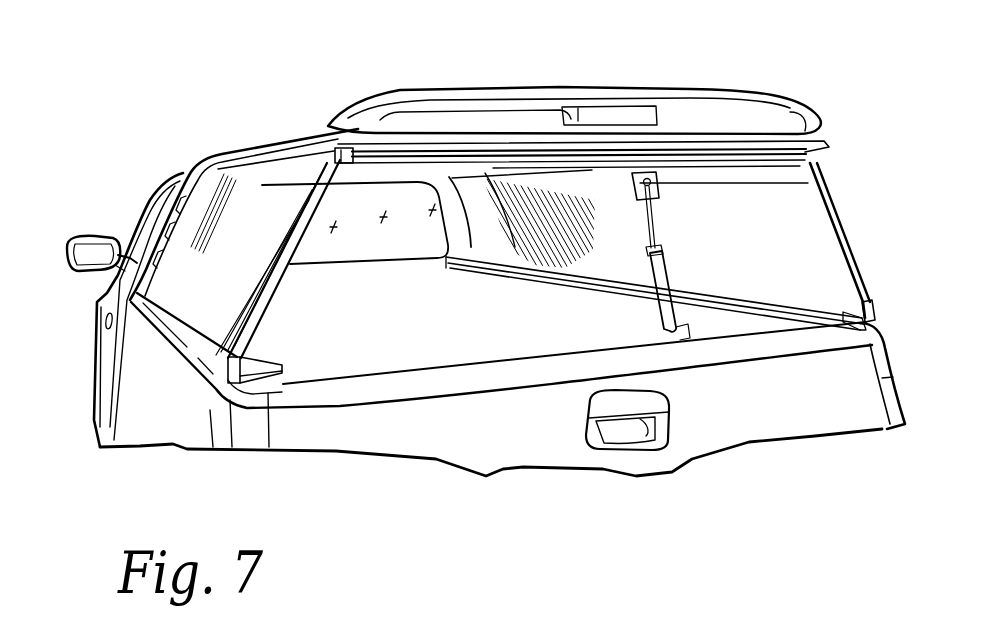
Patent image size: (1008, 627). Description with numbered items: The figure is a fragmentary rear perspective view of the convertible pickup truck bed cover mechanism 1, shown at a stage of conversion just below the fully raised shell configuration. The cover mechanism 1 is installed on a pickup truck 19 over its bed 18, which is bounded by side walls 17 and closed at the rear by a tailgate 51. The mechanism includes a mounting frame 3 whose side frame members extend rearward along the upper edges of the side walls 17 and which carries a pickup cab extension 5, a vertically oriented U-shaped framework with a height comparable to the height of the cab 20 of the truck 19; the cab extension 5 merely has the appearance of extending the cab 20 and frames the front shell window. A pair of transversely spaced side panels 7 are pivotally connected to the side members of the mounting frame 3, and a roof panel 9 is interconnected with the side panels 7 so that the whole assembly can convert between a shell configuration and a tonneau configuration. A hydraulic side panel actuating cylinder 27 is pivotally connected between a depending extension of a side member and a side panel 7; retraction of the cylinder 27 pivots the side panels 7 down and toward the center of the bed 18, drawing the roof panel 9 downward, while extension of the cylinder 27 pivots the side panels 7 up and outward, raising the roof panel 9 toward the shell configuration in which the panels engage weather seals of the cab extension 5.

The convertible pickup truck bed cover mechanism 1 is at (277, 95).
The mounting frame 3 is at (292, 355).
The pickup cab extension 5 is at (195, 165).
The side panels 7 is at (202, 247).
The roof panel 9 is at (725, 130).
The side walls 17 is at (160, 420).
The bed 18 is at (460, 342).
The pickup truck 19 is at (100, 293).
The cab 20 is at (97, 343).
The hydraulic side panel actuating cylinder 27 is at (670, 278).
The tailgate 51 is at (802, 417).